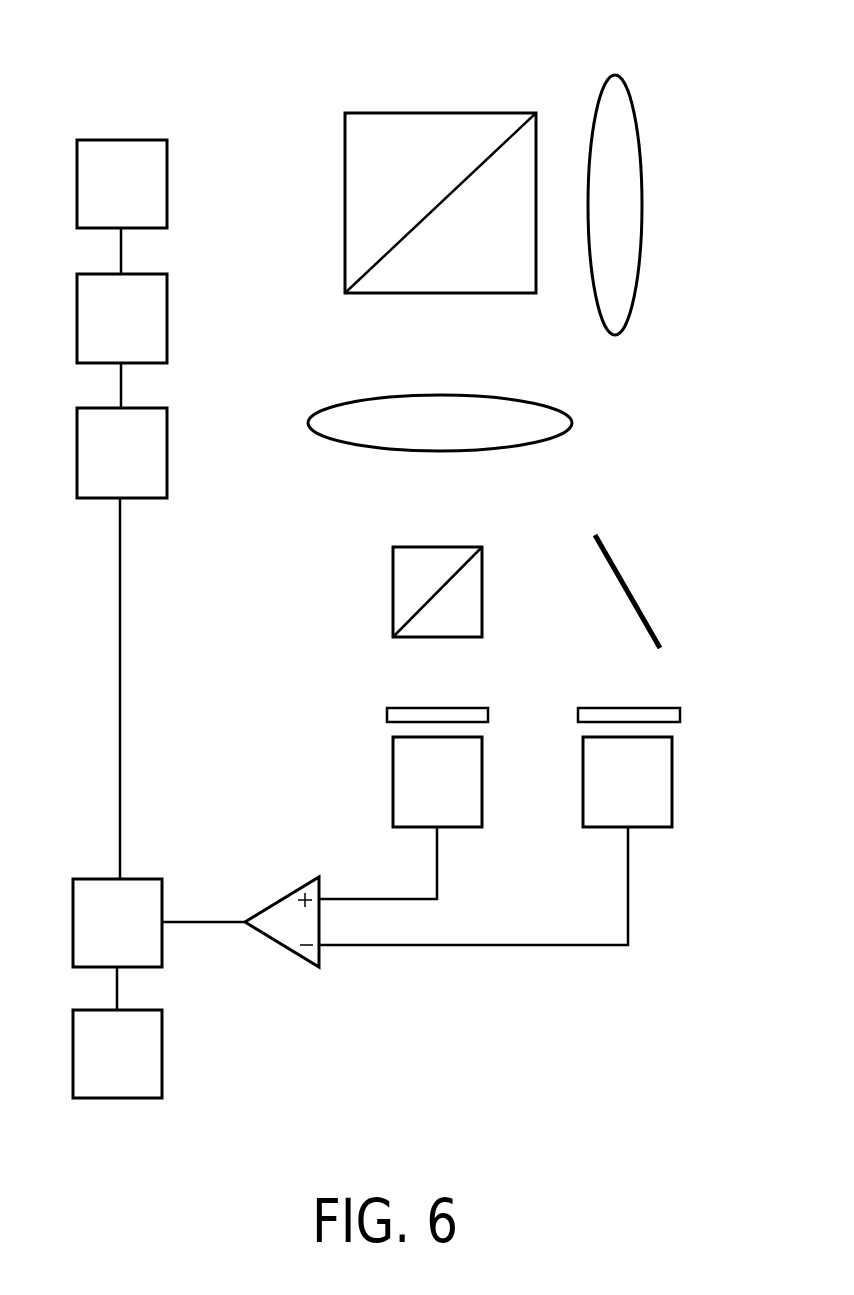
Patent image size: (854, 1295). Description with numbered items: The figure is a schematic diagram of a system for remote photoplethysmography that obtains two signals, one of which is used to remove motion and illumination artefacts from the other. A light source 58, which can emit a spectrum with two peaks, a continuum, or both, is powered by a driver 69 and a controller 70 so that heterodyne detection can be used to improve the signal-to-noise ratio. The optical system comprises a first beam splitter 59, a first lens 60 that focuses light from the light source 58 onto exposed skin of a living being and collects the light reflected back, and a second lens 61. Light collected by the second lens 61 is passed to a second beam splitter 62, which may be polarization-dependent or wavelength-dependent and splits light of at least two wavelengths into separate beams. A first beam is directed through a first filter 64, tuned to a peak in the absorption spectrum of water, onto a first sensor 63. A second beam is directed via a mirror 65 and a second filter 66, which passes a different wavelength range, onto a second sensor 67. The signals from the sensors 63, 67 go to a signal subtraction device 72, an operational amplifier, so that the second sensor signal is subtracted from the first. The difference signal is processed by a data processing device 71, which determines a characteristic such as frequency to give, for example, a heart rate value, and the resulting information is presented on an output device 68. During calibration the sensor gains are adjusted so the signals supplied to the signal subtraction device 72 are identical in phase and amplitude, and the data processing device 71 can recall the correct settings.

The light source 58 is at (122, 184).
The driver 69 is at (122, 318).
The controller 70 is at (122, 453).
The data processing device 71 is at (117, 923).
The output device 68 is at (117, 1054).
The signal subtraction device 72 is at (278, 899).
The first beam splitter 59 is at (463, 130).
The first lens 60 is at (613, 80).
The second lens 61 is at (560, 423).
The second beam splitter 62 is at (393, 585).
The mirror 65 is at (632, 598).
The first filter 64 is at (388, 714).
The second filter 66 is at (683, 714).
The first sensor 63 is at (437, 782).
The second sensor 67 is at (627, 782).